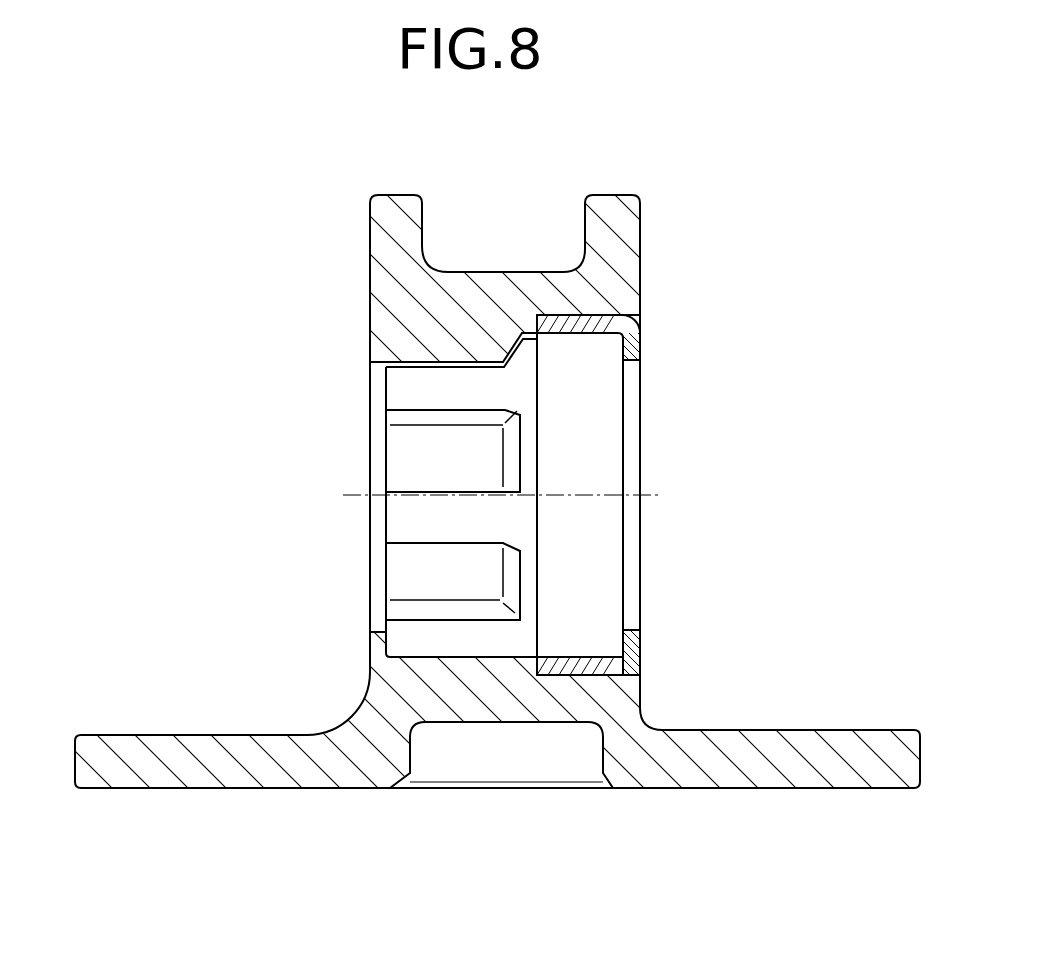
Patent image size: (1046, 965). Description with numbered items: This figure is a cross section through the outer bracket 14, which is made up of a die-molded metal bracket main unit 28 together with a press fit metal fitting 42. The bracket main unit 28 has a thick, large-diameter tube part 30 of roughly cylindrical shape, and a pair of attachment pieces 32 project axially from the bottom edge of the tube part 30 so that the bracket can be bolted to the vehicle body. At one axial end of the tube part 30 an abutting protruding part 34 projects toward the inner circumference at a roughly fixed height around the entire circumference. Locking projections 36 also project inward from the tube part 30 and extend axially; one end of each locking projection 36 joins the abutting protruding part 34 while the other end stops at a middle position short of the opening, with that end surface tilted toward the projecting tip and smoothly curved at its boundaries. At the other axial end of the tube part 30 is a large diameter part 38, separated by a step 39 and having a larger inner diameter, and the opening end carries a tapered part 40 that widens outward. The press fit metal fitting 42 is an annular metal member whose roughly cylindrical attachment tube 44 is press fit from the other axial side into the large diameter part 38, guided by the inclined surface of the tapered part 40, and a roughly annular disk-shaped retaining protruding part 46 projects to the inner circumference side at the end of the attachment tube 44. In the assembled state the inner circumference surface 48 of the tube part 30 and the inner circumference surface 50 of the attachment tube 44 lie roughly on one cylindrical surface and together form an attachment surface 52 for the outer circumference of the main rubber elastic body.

The outer bracket 14 is at (682, 263).
The bracket main unit 28 is at (365, 245).
The tube part 30 is at (491, 297).
The attachment pieces 32 is at (216, 766).
The abutting protruding part 34 is at (380, 643).
The locking projections 36 is at (437, 347).
The large diameter part 38 is at (578, 343).
The step 39 is at (540, 672).
The tapered part 40 is at (622, 316).
The press fit metal fitting 42 is at (645, 348).
The attachment tube 44 is at (607, 667).
The retaining protruding part 46 is at (632, 643).
The inner circumference surface of the tube part 48 is at (436, 657).
The inner circumference surface of the attachment tube 50 is at (568, 677).
The attachment surface 52 is at (532, 655).